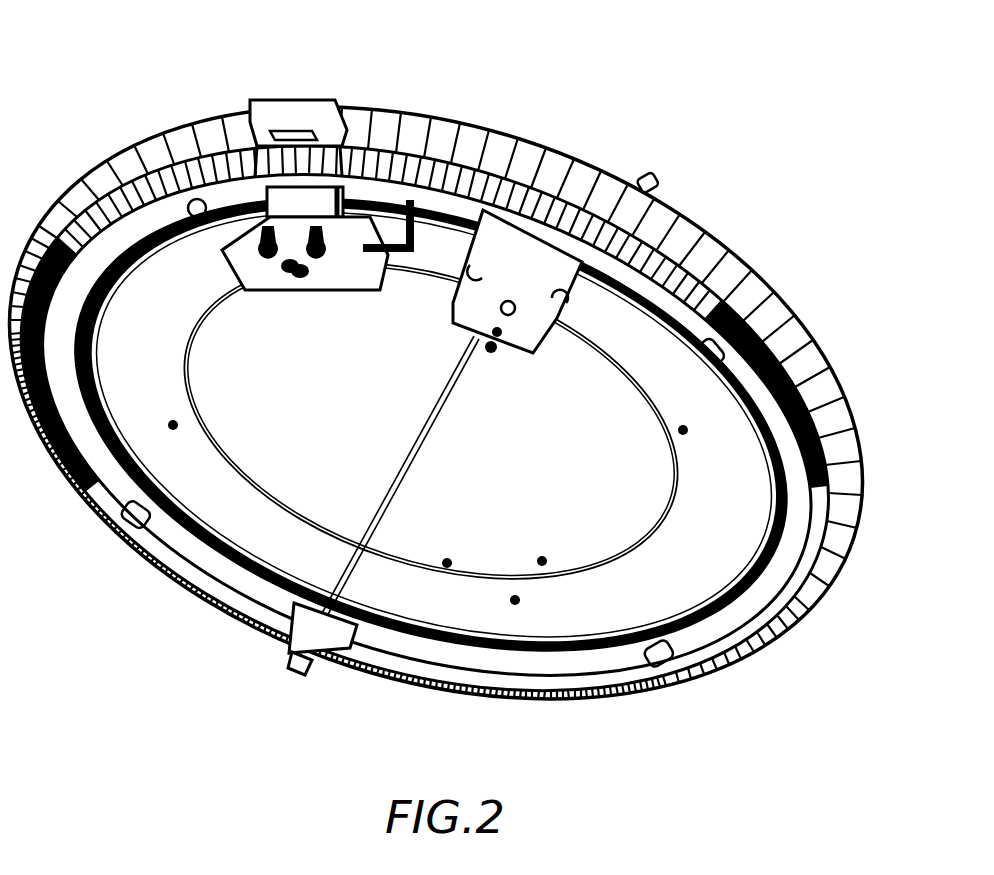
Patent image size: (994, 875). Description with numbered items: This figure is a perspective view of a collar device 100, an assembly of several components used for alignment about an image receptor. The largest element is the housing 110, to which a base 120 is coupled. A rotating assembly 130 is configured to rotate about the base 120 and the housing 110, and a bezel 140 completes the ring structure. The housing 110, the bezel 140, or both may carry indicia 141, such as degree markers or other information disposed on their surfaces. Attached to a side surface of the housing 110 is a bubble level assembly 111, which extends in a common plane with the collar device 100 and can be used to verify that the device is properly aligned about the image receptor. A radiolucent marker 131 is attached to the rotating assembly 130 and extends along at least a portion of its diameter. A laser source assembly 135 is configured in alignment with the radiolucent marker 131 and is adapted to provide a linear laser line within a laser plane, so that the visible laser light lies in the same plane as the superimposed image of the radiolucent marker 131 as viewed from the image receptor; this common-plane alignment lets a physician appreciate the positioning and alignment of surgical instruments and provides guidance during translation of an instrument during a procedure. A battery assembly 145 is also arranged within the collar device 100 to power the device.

The collar device 100 is at (500, 86).
The housing 110 is at (685, 233).
The bubble level assembly 111 is at (291, 102).
The base 120 is at (706, 582).
The rotating assembly 130 is at (763, 593).
The radiolucent marker 131 is at (396, 491).
The laser source assembly 135 is at (531, 357).
The bezel 140 is at (778, 357).
The indicia 141 is at (192, 126).
The battery assembly 145 is at (326, 284).